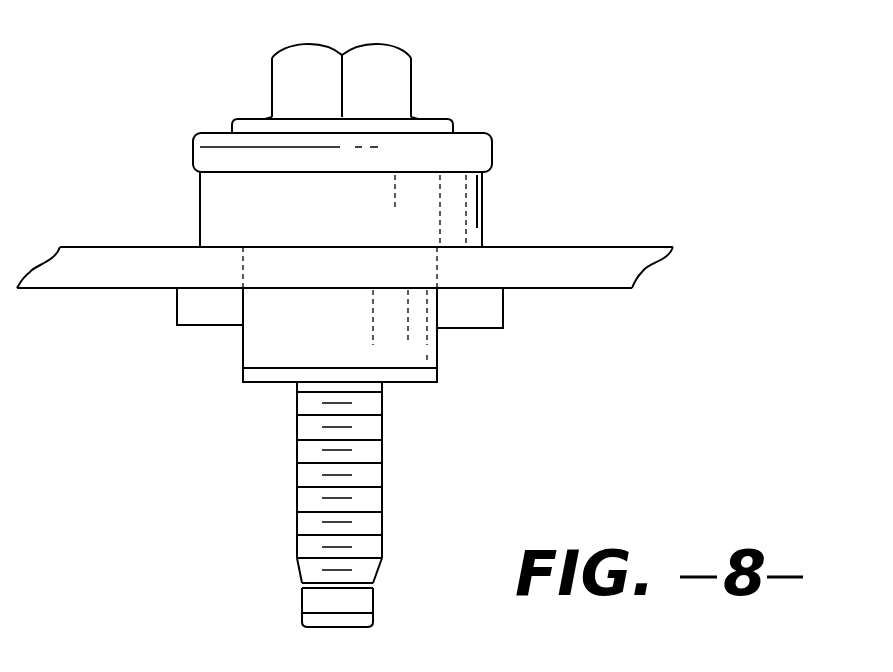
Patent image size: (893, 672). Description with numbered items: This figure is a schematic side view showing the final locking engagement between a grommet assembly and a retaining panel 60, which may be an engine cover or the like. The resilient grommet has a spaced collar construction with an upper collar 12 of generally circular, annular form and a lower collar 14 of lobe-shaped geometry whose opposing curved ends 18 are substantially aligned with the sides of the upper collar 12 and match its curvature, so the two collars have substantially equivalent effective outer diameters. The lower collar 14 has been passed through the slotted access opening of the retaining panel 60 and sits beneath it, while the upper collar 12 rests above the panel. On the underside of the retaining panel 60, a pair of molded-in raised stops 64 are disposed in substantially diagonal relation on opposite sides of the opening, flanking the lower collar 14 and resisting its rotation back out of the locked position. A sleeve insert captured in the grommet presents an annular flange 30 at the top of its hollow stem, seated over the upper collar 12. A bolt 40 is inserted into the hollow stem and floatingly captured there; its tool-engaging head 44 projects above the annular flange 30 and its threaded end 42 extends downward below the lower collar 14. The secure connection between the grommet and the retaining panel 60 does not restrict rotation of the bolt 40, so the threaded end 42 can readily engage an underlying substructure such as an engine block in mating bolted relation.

The tool-engaging head 44 is at (285, 76).
The annular flange 30 is at (203, 158).
The upper collar 12 is at (455, 198).
The retaining panel 60 is at (587, 248).
The curved ends 18 is at (313, 343).
The raised stops 64 is at (205, 315).
The lower collar 14 is at (437, 352).
The threaded end 42 is at (297, 475).
The bolt 40 is at (383, 453).